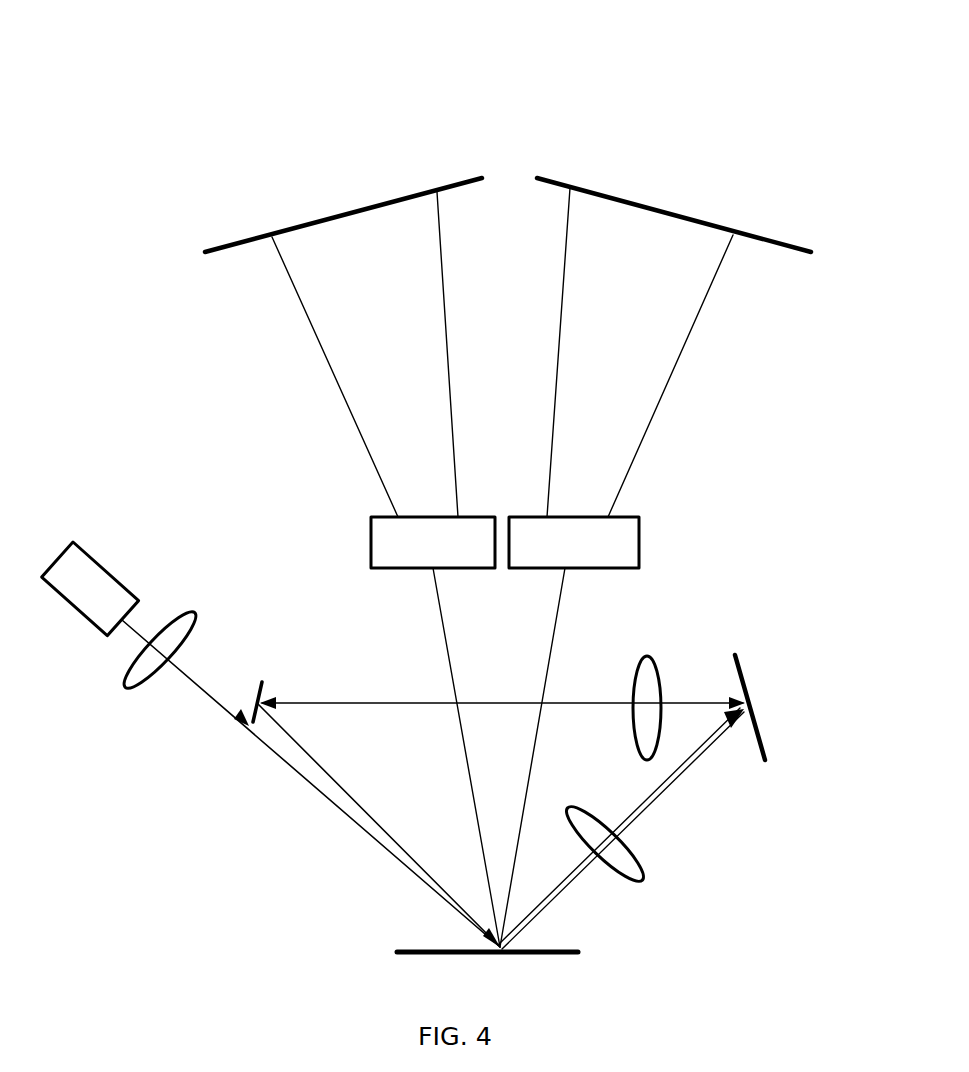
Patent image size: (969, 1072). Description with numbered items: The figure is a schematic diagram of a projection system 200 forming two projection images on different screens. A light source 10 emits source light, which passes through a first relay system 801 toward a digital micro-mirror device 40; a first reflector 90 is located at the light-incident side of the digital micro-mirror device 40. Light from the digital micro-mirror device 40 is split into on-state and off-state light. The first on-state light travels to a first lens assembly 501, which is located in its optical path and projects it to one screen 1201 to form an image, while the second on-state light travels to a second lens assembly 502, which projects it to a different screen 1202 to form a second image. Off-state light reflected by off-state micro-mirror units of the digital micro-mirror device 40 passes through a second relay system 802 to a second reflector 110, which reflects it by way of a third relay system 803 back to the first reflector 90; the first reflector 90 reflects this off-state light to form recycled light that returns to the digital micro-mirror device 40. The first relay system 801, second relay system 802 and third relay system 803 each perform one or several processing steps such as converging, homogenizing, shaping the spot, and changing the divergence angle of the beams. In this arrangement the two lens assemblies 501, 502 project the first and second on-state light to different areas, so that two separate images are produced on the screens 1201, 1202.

The projection system 200 is at (490, 146).
The screen 1201 is at (348, 207).
The screen 1202 is at (683, 194).
The first lens assembly 501 is at (380, 515).
The second lens assembly 502 is at (628, 515).
The light source 10 is at (90, 552).
The first relay system 801 is at (170, 613).
The second relay system 802 is at (634, 852).
The third relay system 803 is at (650, 655).
The first reflector 90 is at (252, 700).
The second reflector 110 is at (748, 655).
The digital micro-mirror device 40 is at (555, 950).